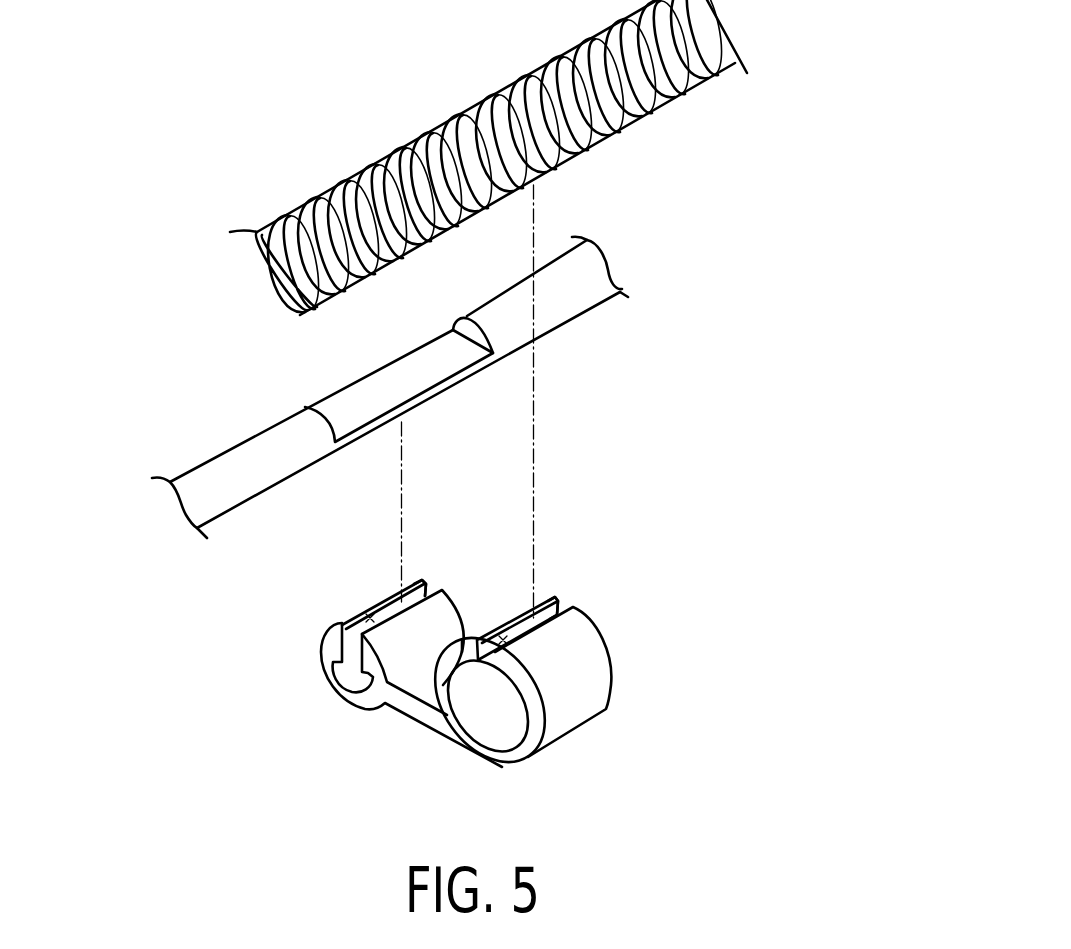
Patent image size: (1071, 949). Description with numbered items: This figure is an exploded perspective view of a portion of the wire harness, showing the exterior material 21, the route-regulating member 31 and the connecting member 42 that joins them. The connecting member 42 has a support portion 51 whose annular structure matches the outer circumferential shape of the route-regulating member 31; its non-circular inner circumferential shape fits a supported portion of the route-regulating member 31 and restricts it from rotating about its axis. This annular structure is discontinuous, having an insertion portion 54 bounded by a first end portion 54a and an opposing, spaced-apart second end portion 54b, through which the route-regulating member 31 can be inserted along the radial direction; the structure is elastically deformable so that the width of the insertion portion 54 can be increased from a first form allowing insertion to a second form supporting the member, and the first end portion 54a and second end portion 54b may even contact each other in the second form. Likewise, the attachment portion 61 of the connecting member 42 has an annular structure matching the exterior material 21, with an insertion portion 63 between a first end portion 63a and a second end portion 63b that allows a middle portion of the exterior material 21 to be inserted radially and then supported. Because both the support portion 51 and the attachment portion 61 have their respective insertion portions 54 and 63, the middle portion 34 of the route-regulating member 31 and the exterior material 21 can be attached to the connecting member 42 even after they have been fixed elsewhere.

The exterior material 21 is at (600, 146).
The route-regulating member 31 is at (390, 385).
The middle portion 34 is at (462, 317).
The connecting member 42 is at (453, 629).
The support portion 51 is at (348, 707).
The insertion portion 54 is at (366, 615).
The first end portion 54a is at (355, 612).
The second end portion 54b is at (424, 590).
The attachment portion 61 is at (537, 738).
The insertion portion 63 is at (521, 608).
The first end portion 63a is at (502, 640).
The second end portion 63b is at (555, 612).